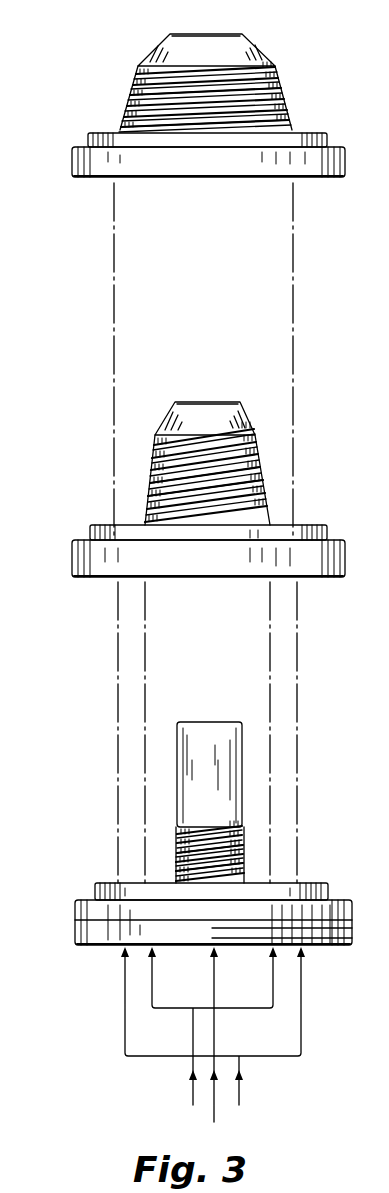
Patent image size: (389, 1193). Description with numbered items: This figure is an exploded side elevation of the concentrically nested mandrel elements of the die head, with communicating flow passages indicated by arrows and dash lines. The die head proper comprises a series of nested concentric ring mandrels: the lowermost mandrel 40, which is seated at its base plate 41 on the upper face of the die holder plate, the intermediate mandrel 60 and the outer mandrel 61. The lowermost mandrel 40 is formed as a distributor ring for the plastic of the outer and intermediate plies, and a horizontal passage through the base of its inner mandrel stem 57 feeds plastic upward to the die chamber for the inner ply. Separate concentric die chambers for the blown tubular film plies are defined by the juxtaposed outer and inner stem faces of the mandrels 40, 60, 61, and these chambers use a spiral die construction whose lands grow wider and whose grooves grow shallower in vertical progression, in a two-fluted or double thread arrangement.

The outer mandrel 61 is at (303, 77).
The intermediate mandrel 60 is at (274, 459).
The inner mandrel stem 57 is at (212, 728).
The lowermost mandrel 40 is at (184, 815).
The base plate 41 is at (76, 918).